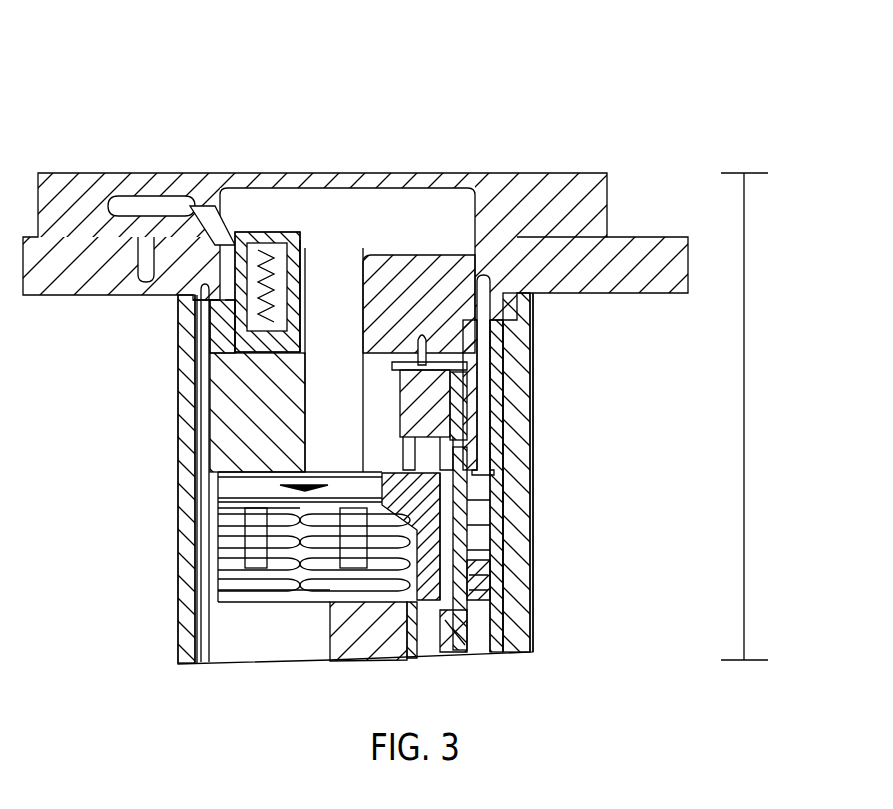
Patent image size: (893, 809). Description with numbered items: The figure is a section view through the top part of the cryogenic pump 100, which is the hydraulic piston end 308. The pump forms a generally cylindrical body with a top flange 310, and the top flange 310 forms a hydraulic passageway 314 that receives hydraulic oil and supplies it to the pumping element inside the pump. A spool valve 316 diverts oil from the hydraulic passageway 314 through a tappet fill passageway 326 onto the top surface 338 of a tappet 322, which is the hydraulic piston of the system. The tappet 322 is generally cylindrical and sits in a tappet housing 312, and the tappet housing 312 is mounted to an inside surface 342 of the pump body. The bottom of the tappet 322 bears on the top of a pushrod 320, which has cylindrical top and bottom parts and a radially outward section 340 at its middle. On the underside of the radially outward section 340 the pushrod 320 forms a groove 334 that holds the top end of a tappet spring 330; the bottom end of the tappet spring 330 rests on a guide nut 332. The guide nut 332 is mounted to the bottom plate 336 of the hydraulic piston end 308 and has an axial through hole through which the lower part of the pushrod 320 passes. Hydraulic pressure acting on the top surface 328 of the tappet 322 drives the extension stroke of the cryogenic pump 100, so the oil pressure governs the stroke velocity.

The cryogenic pump 100 is at (128, 78).
The hydraulic piston end 308 is at (747, 410).
The top flange 310 is at (597, 206).
The tappet housing 312 is at (258, 413).
The hydraulic passageway 314 is at (105, 176).
The spool valve 316 is at (262, 248).
The pushrod 320 is at (433, 403).
The tappet 322 is at (500, 350).
The tappet fill passageway 326 is at (440, 350).
The top surface of the tappet 328 is at (335, 437).
The tappet spring 330 is at (472, 553).
The guide nut 332 is at (450, 587).
The groove 334 is at (477, 503).
The bottom plate 336 is at (367, 638).
The top surface of the tappet 338 is at (422, 355).
The radially outward section 340 is at (470, 497).
The inside surface 342 is at (200, 360).